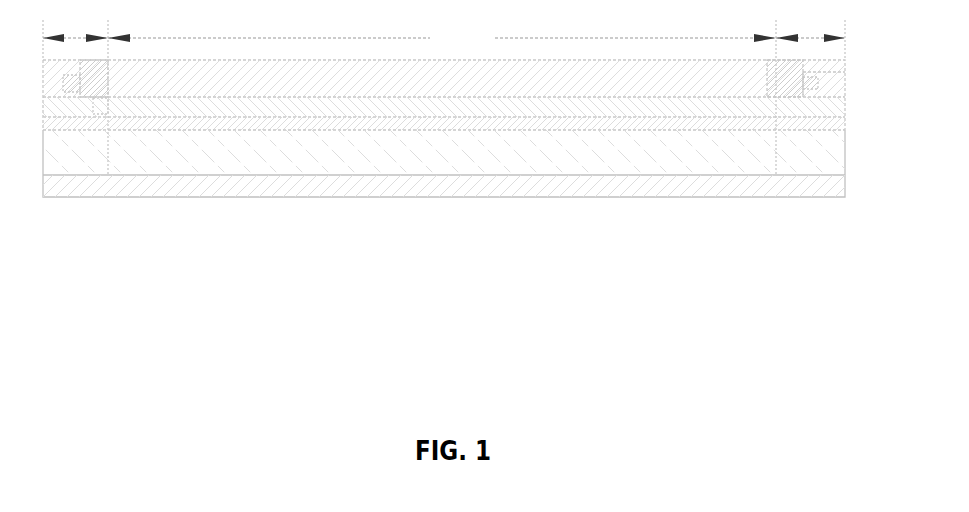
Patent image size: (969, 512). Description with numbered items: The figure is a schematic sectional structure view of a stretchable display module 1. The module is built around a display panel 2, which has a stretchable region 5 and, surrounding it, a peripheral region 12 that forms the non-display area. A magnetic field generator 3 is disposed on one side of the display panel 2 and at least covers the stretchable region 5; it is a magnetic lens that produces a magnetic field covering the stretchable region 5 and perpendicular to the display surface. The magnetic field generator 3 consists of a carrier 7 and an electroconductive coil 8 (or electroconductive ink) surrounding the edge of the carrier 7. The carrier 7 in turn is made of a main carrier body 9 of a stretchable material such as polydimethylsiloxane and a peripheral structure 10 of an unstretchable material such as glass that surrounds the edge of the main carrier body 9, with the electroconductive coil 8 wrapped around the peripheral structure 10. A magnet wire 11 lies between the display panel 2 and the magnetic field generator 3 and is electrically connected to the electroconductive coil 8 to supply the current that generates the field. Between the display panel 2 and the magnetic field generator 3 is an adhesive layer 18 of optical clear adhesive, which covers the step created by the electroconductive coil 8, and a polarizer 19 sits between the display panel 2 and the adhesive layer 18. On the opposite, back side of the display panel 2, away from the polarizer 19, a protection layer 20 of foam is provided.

The stretchable display module 1 is at (238, 214).
The display panel 2 is at (480, 148).
The magnetic field generator 3 is at (444, 220).
The stretchable region 5 is at (442, 94).
The carrier 7 is at (444, 189).
The electroconductive coil 8 is at (812, 78).
The main carrier body 9 is at (654, 76).
The peripheral structure 10 is at (782, 78).
The magnet wire 11 is at (102, 100).
The peripheral region 12 is at (444, 30).
The adhesive layer 18 is at (172, 100).
The polarizer 19 is at (322, 125).
The protection layer 20 is at (403, 187).